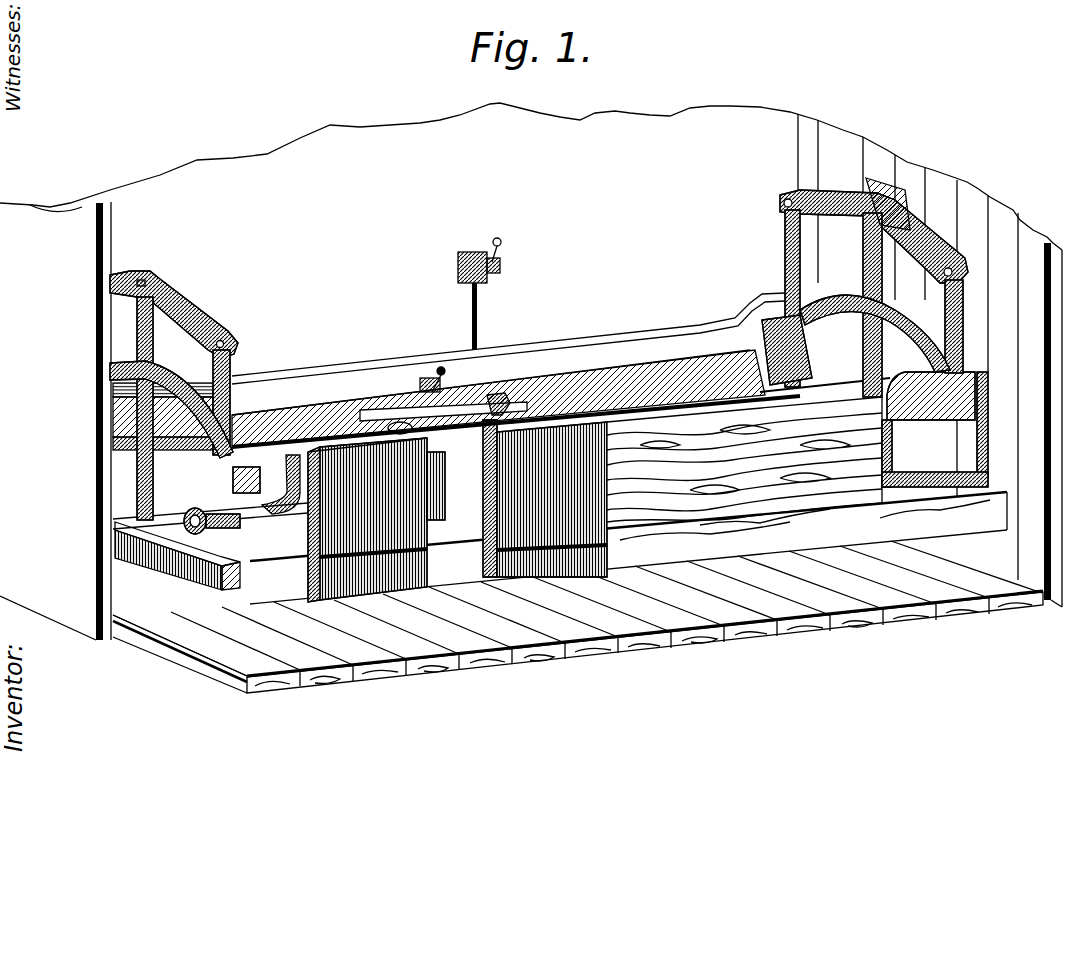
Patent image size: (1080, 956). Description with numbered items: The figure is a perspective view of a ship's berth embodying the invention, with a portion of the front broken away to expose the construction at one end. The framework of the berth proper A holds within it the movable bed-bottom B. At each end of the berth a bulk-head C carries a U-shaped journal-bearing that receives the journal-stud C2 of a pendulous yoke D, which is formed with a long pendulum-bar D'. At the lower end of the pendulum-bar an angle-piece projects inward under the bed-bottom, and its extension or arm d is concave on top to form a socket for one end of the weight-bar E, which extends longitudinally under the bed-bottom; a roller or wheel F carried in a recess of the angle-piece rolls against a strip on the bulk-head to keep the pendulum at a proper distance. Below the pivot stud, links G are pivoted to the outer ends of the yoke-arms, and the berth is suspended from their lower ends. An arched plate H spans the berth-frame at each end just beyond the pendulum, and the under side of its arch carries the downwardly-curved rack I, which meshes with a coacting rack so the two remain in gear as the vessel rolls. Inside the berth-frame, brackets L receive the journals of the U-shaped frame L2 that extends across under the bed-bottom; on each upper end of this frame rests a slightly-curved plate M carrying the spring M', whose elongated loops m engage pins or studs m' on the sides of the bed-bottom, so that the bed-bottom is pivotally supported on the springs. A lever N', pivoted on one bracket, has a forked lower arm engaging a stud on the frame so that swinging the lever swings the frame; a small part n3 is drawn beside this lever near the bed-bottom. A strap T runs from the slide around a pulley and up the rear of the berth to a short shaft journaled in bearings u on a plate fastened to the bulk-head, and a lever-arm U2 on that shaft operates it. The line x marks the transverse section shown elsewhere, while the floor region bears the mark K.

The framework of the berth A is at (440, 481).
The bed-bottom B is at (680, 383).
The bulk-head C is at (897, 183).
The journal-stud C2 is at (144, 280).
The pendulous yoke D is at (539, 362).
The pendulum-bar D' is at (480, 366).
The weight-bar E is at (176, 572).
The roller or wheel F is at (118, 546).
The links G is at (231, 370).
The arched plate H is at (258, 470).
The downwardly-curved rack I is at (110, 408).
The floor K is at (595, 660).
The brackets L is at (443, 404).
The U-shaped frame L2 is at (412, 431).
The slightly-curved plate M is at (367, 520).
The spring M' is at (419, 486).
The lever N' is at (455, 373).
The strap T is at (479, 327).
The lever-arm U2 is at (503, 253).
The extension or arm d is at (241, 534).
The loops m is at (344, 396).
The pins or studs m' is at (493, 397).
The plate n3 is at (421, 377).
The bearings u is at (457, 268).
The section line x is at (420, 350).